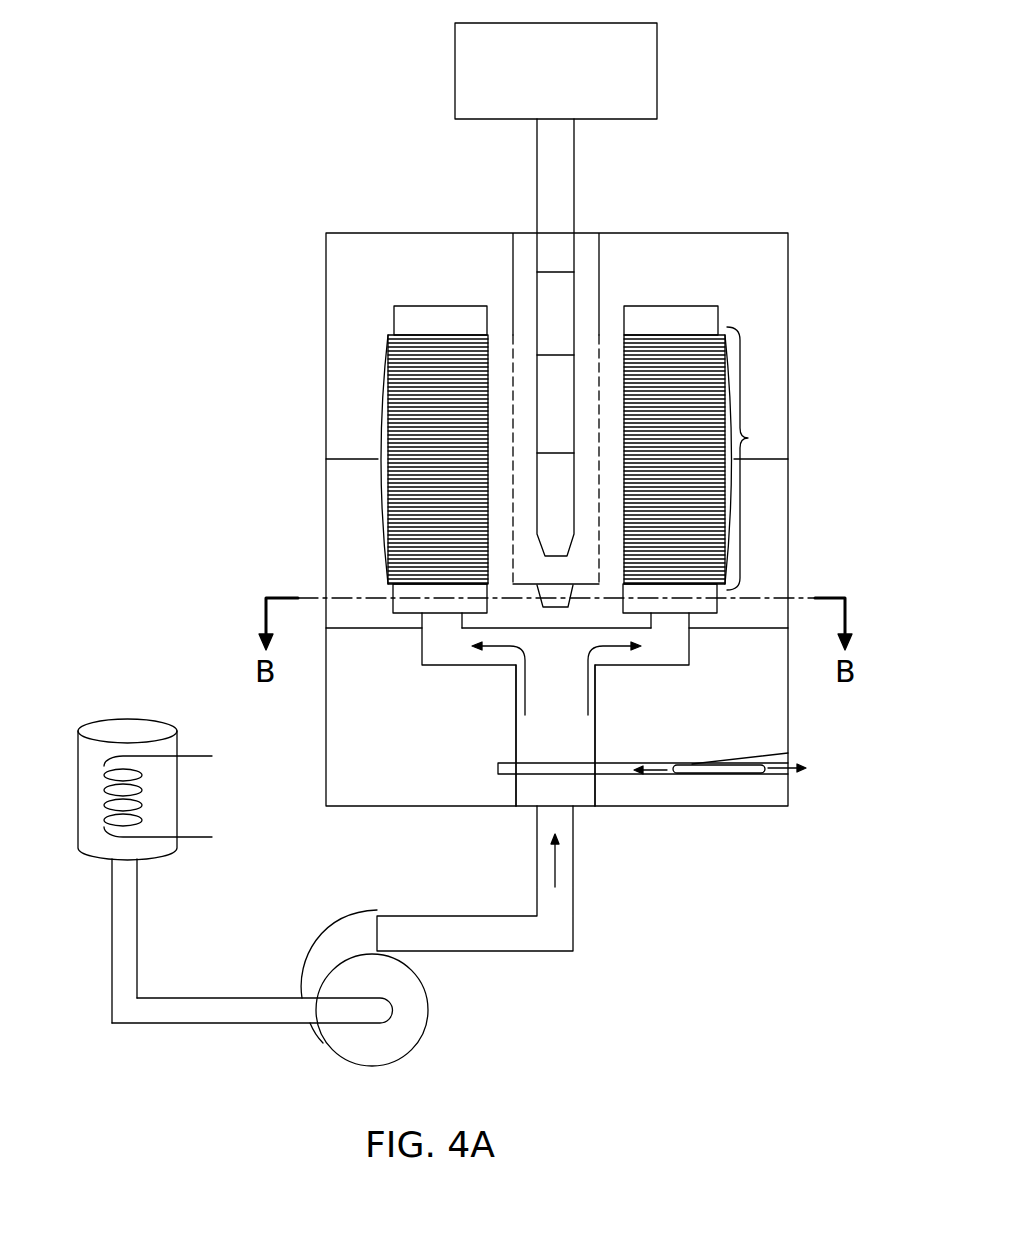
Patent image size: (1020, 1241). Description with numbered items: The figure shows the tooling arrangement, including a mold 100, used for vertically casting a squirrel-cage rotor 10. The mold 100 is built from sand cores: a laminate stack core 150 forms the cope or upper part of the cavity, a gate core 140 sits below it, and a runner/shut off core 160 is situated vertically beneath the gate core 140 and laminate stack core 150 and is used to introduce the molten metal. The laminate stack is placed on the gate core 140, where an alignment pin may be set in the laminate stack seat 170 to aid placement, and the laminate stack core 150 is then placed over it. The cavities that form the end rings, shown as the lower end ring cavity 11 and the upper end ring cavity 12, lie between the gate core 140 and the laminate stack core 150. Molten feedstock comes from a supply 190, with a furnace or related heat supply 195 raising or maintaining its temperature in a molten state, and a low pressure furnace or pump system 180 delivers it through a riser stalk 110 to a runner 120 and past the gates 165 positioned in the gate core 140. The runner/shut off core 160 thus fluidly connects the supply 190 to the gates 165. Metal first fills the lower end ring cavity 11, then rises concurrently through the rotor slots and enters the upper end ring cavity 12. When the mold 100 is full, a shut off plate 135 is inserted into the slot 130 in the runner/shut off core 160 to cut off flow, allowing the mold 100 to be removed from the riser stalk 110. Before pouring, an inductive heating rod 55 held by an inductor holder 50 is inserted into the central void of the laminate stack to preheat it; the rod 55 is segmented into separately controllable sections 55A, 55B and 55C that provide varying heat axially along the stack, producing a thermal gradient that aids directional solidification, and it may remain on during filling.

The mold 100 is at (345, 222).
The inductor holder 50 is at (650, 70).
The inductive heating rod 55 is at (575, 184).
The inductive heating section 55A is at (567, 509).
The inductive heating section 55B is at (552, 412).
The inductive heating section 55C is at (568, 290).
The squirrel-cage rotor 10 is at (756, 458).
The upper end ring cavity 12 is at (697, 312).
The lower end ring cavity 11 is at (705, 605).
The laminate stack core 150 is at (347, 380).
The gate core 140 is at (347, 535).
The runner/shut off core 160 is at (338, 754).
The gates 165 is at (444, 618).
The laminate stack seat 170 is at (553, 602).
The runner 120 is at (540, 752).
The slot 130 is at (617, 768).
The shut off plate 135 is at (720, 768).
The riser stalk 110 is at (537, 864).
The low pressure furnace or pump system 180 is at (432, 1010).
The supply 190 is at (95, 722).
The heat supply 195 is at (213, 840).